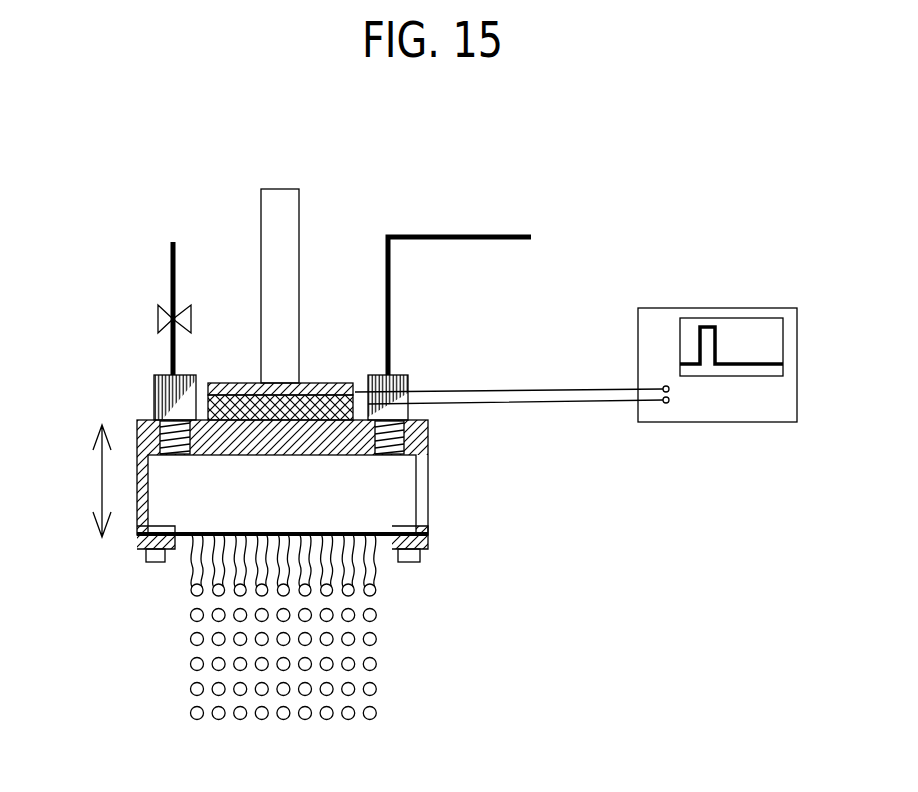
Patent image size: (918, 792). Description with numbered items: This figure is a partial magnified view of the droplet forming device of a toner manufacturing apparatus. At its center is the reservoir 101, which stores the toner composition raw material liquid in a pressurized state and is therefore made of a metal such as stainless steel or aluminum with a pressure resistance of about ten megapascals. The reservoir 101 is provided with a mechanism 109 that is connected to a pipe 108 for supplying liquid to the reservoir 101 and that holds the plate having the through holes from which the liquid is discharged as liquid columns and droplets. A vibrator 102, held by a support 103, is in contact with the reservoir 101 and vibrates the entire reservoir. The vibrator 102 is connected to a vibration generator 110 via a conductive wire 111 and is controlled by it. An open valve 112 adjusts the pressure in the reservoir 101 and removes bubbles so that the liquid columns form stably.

The reservoir 101 is at (393, 480).
The vibrator 102 is at (340, 383).
The support 103 is at (291, 243).
The pipe 108 is at (500, 240).
The mechanism 109 is at (423, 550).
The vibration generator 110 is at (717, 407).
The conductive wire 111 is at (600, 400).
The open valve 112 is at (158, 318).